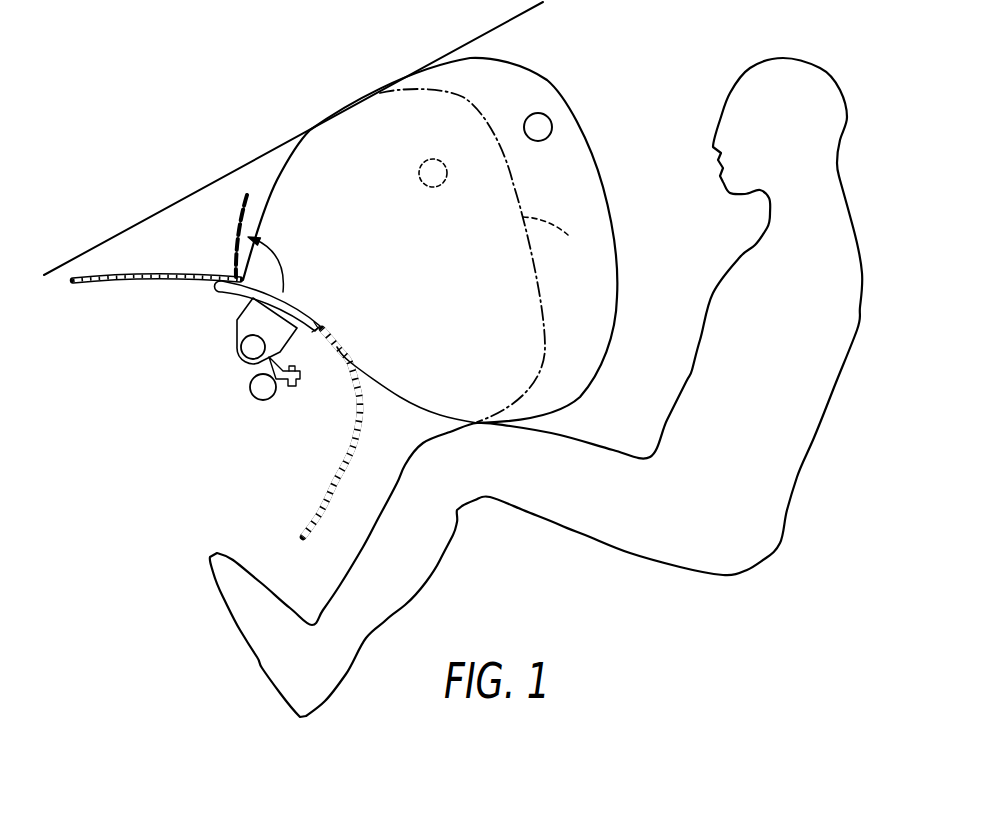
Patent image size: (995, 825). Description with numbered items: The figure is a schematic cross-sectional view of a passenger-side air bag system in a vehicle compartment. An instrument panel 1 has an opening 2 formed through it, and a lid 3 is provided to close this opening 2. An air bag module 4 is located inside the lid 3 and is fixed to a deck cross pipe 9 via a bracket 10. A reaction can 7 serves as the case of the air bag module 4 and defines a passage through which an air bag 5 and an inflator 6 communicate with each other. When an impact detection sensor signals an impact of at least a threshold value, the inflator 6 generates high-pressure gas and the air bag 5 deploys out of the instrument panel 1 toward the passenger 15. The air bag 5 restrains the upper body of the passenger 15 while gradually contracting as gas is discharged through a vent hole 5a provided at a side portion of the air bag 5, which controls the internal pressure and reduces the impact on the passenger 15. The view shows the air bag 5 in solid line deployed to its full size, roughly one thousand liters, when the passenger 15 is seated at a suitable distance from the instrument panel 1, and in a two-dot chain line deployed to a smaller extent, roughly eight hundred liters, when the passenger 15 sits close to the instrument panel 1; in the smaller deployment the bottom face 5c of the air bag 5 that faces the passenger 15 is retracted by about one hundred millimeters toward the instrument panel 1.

The instrument panel 1 is at (127, 277).
The opening 2 is at (297, 304).
The lid 3 is at (232, 231).
The air bag module 4 is at (220, 374).
The air bag 5 is at (277, 180).
The vent hole 5a is at (547, 142).
The bottom face 5c is at (603, 190).
The inflator 6 is at (240, 346).
The reaction can 7 is at (297, 343).
The deck cross pipe 9 is at (258, 400).
The bracket 10 is at (292, 392).
The passenger 15 is at (833, 390).